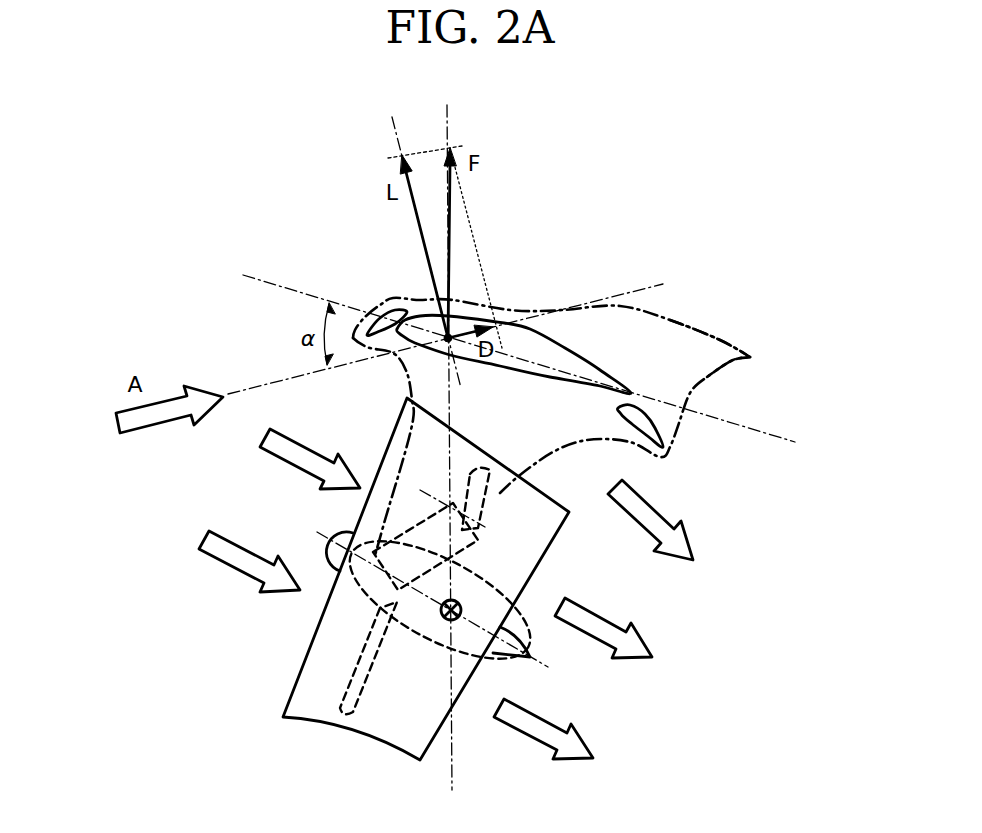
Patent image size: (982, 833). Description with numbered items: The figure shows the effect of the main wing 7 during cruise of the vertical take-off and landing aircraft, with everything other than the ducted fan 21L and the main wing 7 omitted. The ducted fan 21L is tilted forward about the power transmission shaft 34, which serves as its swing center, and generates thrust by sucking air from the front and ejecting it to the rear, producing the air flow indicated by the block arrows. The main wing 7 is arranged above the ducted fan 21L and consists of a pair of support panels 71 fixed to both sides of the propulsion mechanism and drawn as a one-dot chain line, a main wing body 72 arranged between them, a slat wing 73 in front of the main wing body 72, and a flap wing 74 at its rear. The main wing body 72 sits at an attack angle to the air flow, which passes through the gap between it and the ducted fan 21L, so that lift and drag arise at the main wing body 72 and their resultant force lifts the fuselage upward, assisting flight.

The main wing 7 is at (760, 325).
The support panel 71 is at (712, 332).
The main wing body 72 is at (565, 351).
The slat wing 73 is at (381, 311).
The flap wing 74 is at (657, 433).
The ducted fan 21L is at (300, 666).
The power transmission shaft 34 is at (445, 620).